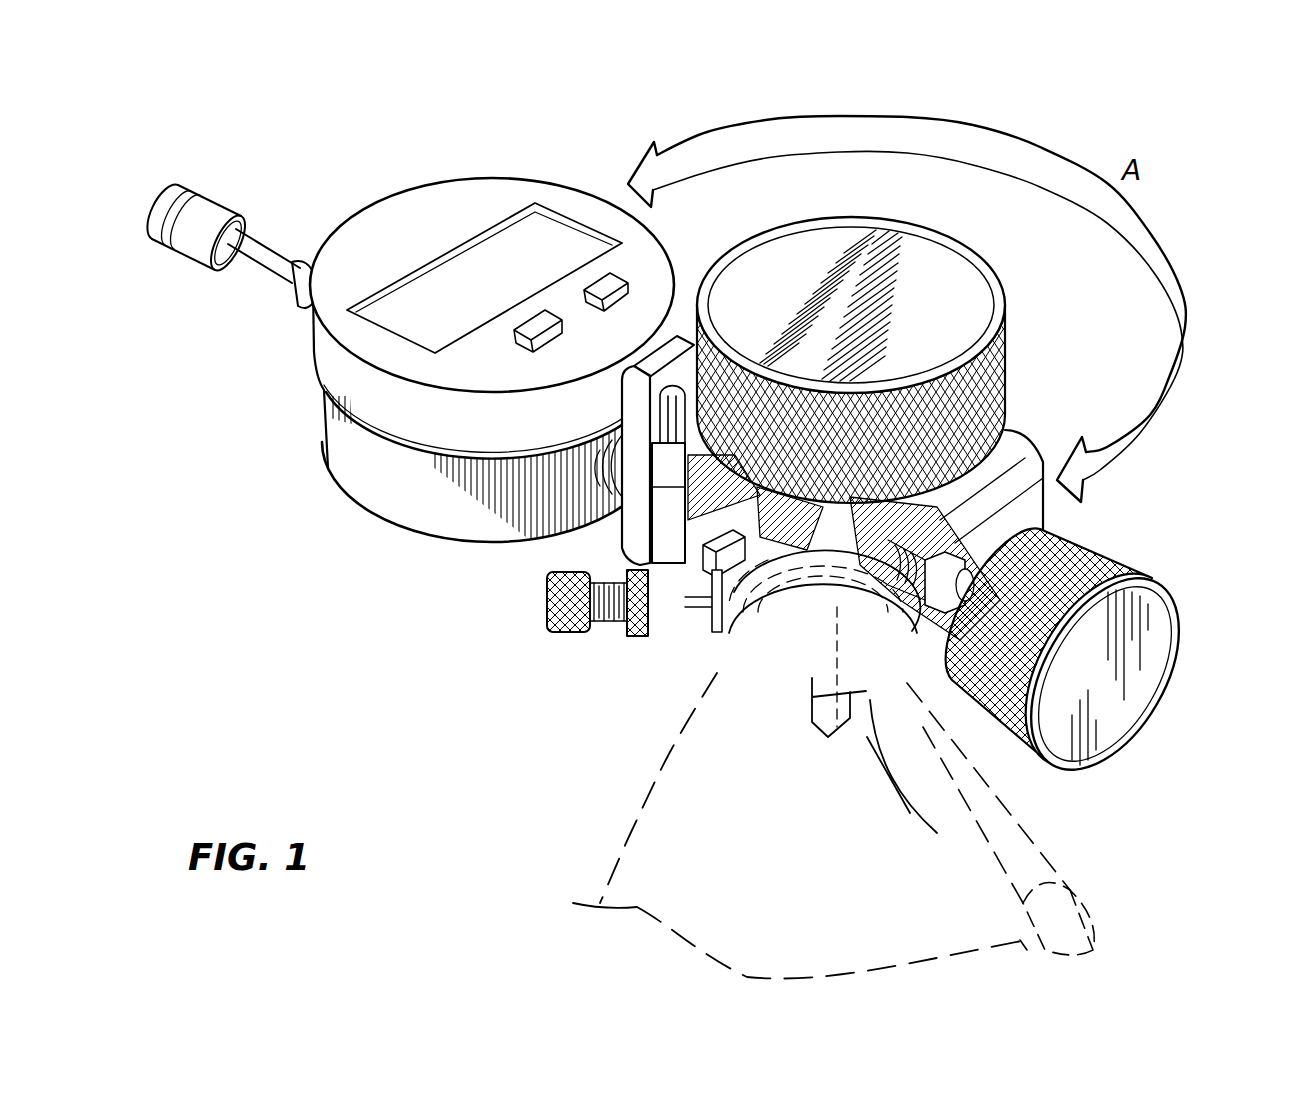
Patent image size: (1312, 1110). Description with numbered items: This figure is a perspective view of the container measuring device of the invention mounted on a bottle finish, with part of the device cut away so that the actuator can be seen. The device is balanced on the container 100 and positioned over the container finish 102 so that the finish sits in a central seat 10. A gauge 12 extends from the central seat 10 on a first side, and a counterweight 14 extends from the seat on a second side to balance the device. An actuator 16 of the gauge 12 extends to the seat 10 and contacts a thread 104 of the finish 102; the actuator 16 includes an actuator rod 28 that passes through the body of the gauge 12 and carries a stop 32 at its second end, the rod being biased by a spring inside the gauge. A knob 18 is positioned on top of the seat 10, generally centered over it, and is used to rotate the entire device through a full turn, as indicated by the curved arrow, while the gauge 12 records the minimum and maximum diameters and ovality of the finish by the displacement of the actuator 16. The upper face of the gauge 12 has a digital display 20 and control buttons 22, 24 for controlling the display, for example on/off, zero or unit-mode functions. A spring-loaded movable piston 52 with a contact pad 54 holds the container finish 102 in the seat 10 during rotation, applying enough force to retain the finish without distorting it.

The central seat 10 is at (610, 540).
The gauge 12 is at (437, 383).
The counterweight 14 is at (1186, 636).
The actuator 16 is at (714, 556).
The knob 18 is at (942, 268).
The digital display 20 is at (527, 226).
The control button 22 is at (615, 285).
The control button 24 is at (520, 330).
The actuator rod 28 is at (258, 253).
The stop 32 is at (200, 181).
The movable piston 52 is at (548, 642).
The contact pad 54 is at (690, 630).
The container 100 is at (770, 887).
The container finish 102 is at (773, 668).
The thread 104 is at (758, 612).